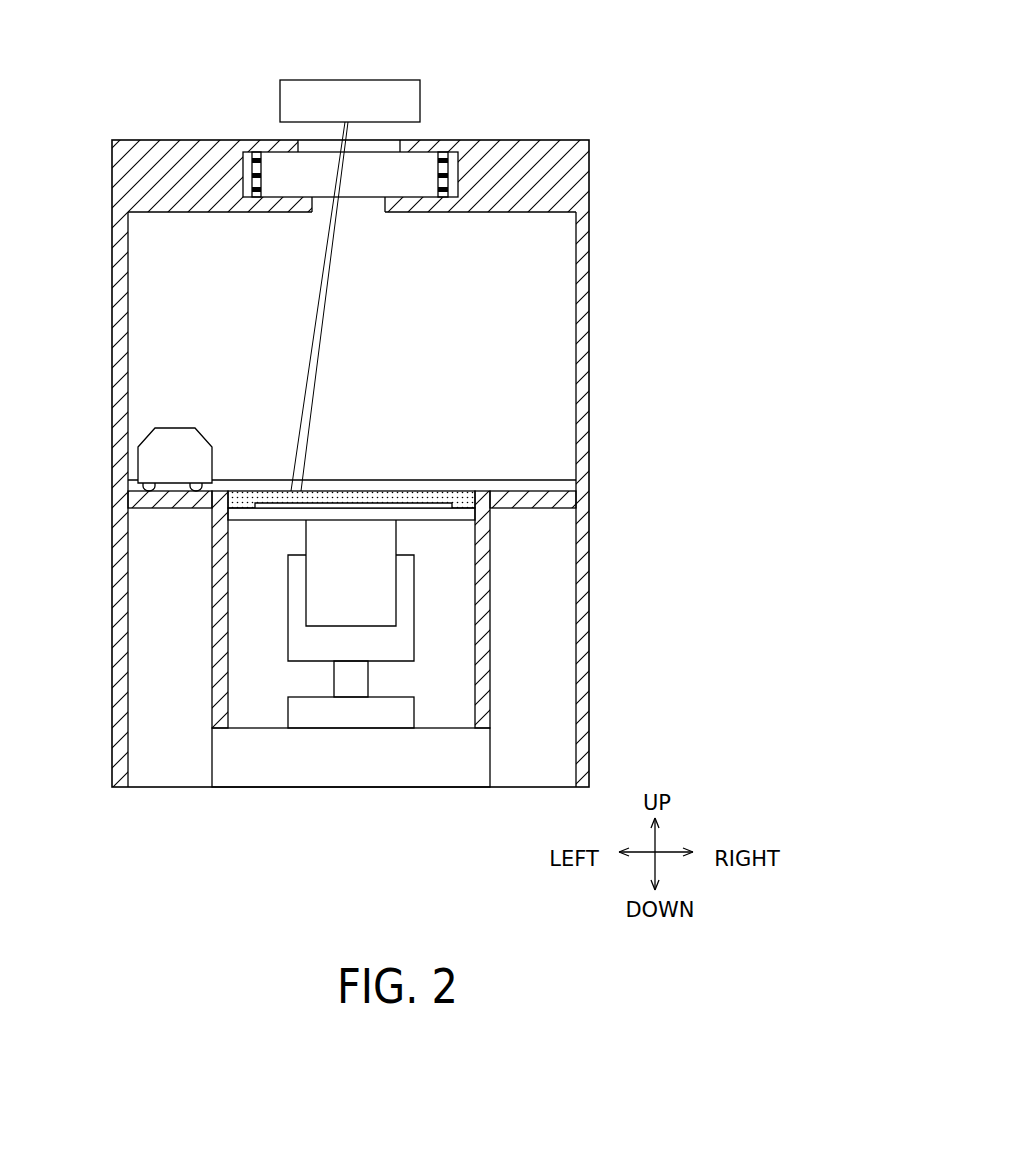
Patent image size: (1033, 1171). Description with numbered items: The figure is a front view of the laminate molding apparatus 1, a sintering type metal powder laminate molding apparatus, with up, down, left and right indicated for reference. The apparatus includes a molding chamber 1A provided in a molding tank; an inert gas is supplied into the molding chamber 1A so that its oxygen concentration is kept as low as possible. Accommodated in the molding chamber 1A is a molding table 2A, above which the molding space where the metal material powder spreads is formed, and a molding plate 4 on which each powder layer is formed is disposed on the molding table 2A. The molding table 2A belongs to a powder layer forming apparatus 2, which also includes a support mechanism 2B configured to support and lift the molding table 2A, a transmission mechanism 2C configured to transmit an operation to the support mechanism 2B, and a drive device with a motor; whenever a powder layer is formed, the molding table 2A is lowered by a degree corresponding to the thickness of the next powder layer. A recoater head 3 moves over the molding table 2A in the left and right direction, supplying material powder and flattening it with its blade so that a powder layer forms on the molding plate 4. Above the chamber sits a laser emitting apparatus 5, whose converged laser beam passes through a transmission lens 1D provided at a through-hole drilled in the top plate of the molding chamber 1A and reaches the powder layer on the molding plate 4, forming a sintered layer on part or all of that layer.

The laminate molding apparatus 1 is at (618, 133).
The molding chamber 1A is at (180, 253).
The transmission lens 1D is at (393, 147).
The powder layer forming apparatus 2 is at (382, 639).
The molding table 2A is at (427, 513).
The support mechanism 2B is at (318, 607).
The transmission mechanism 2C is at (408, 573).
The recoater head 3 is at (210, 401).
The molding plate 4 is at (378, 505).
The laser emitting apparatus 5 is at (358, 92).